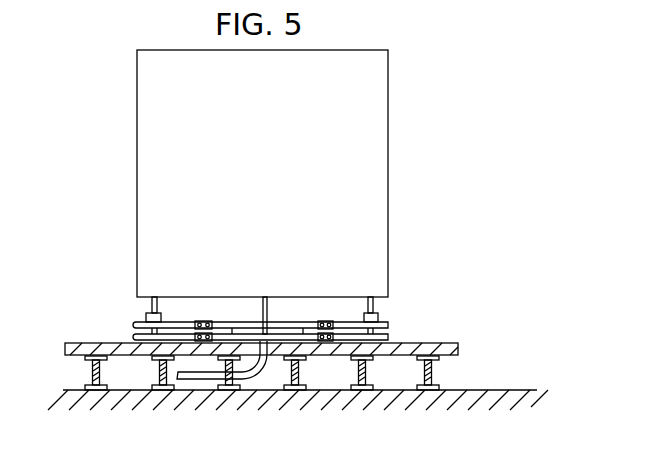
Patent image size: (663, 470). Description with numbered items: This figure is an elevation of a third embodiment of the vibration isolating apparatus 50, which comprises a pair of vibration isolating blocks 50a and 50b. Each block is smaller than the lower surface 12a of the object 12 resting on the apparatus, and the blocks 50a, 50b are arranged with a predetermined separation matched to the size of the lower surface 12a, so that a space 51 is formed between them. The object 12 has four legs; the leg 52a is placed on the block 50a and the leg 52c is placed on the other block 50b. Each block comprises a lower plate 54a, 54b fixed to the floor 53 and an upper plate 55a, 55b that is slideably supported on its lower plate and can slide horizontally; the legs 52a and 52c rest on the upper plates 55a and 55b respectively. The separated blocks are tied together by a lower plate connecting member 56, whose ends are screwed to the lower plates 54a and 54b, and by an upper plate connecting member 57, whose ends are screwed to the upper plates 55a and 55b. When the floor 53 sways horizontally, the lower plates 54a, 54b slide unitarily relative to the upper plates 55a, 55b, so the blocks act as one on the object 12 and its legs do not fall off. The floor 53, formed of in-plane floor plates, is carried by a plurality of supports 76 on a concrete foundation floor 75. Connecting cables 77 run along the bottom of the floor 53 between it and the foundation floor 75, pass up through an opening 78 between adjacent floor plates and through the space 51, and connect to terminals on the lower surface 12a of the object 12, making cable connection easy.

The object 12 is at (388, 77).
The lower surface 12a is at (140, 304).
The vibration isolating apparatus 50 is at (333, 253).
The vibration isolating block 50a is at (342, 319).
The vibration isolating block 50b is at (187, 321).
The space 51 is at (233, 328).
The leg 52a is at (380, 306).
The leg 52c is at (145, 316).
The floor 53 is at (450, 343).
The lower plate 54a is at (388, 338).
The lower plate 54b is at (134, 340).
The upper plate 55a is at (388, 322).
The upper plate 55b is at (133, 325).
The lower plate connecting member 56 is at (275, 333).
The upper plate connecting member 57 is at (312, 343).
The foundation floor 75 is at (517, 390).
The supports 76 is at (434, 370).
The connecting cables 77 is at (196, 380).
The opening 78 is at (258, 383).